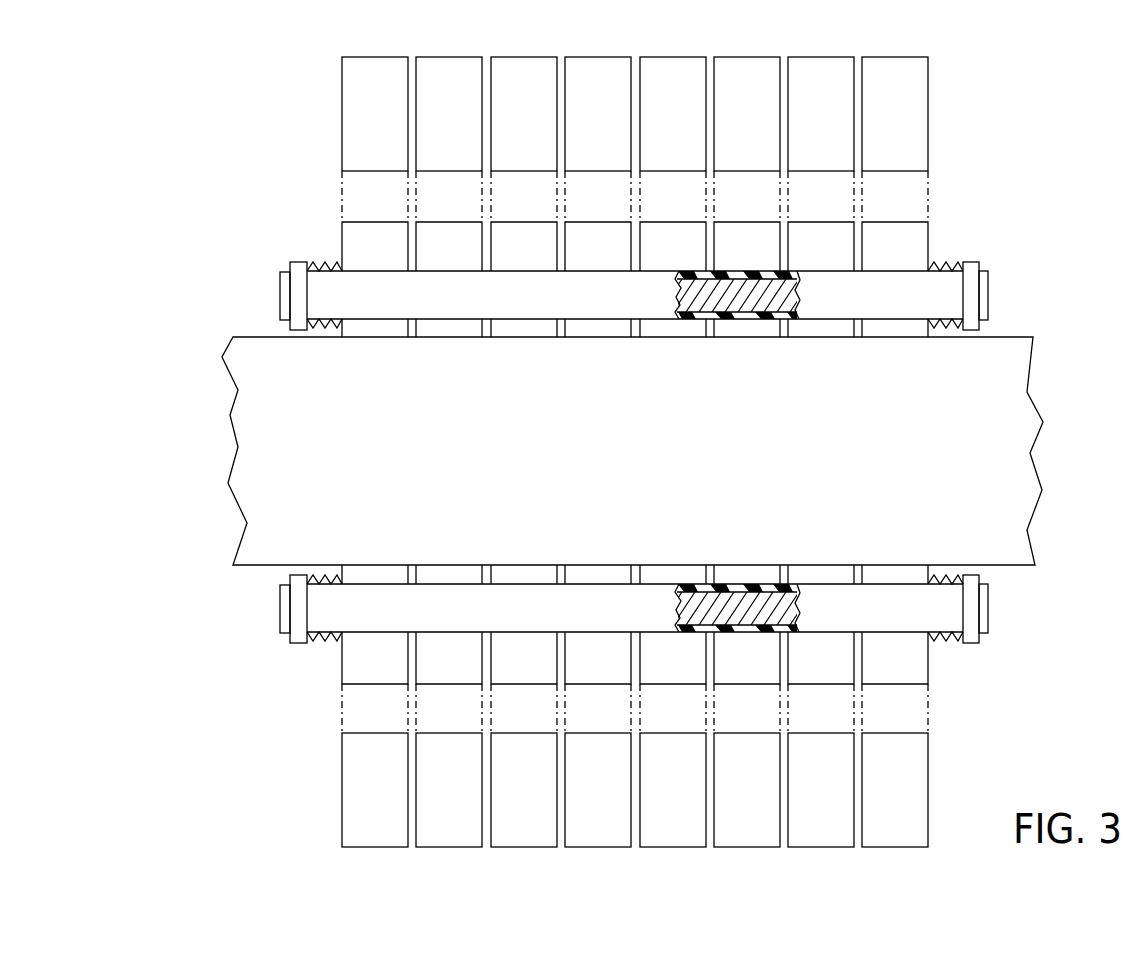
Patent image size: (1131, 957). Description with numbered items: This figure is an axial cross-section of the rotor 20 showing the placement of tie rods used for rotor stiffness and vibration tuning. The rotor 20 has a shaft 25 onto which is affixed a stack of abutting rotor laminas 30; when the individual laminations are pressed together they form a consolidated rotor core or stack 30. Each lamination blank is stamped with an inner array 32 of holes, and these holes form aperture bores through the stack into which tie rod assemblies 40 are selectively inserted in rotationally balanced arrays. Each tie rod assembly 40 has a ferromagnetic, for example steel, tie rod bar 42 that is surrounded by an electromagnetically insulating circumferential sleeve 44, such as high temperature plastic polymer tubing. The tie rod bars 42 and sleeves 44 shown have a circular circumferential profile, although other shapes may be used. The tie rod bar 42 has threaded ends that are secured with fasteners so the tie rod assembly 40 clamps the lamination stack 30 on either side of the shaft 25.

The rotor assembly 20 is at (268, 112).
The shaft 25 is at (970, 433).
The rotor laminas 30 is at (525, 122).
The inner array of holes 32 is at (508, 317).
The tie rod assembly 40 is at (266, 297).
The tie rod bar 42 is at (797, 290).
The circumferential sleeve 44 is at (800, 315).